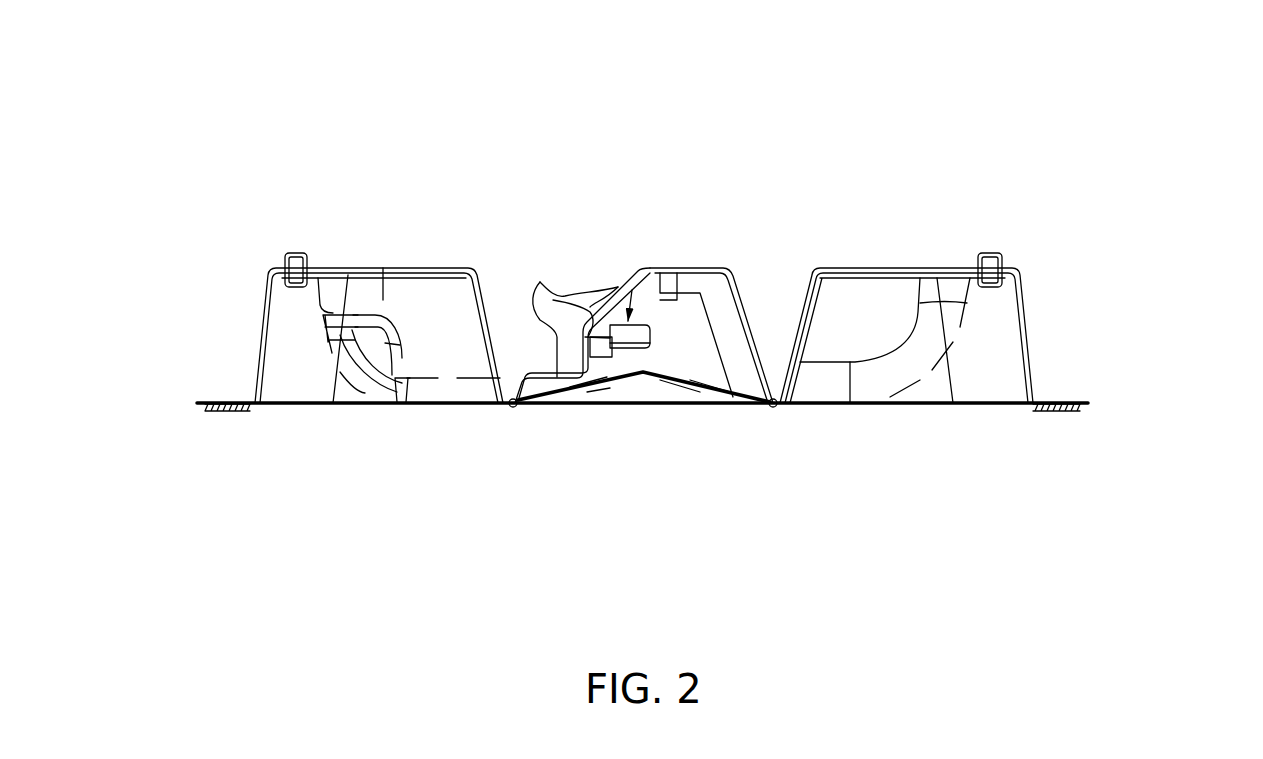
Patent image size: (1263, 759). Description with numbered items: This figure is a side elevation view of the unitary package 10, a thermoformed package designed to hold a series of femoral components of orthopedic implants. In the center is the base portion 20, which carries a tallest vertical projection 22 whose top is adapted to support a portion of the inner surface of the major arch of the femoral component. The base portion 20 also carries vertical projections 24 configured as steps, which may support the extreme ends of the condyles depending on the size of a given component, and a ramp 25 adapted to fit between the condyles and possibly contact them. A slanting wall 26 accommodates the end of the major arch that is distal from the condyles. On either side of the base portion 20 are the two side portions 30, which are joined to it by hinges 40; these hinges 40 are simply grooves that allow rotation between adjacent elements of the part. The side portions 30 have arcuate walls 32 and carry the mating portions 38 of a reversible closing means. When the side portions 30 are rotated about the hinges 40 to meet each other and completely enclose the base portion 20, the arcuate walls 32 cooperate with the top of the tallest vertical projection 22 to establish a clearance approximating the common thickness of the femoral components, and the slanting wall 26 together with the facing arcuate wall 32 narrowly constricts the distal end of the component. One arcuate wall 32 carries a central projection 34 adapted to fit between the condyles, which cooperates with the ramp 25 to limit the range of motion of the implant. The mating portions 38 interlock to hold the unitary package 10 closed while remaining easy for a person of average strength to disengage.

The unitary package 10 is at (998, 113).
The base portion 20 is at (642, 409).
The tallest vertical projection 22 is at (683, 264).
The vertical projections 24 is at (556, 368).
The ramp 25 is at (632, 274).
The slanting wall 26 is at (756, 338).
The side portions 30 is at (257, 337).
The arcuate walls 32 is at (346, 405).
The central projection 34 is at (383, 311).
The mating portions 38 is at (297, 250).
The hinges 40 is at (513, 413).